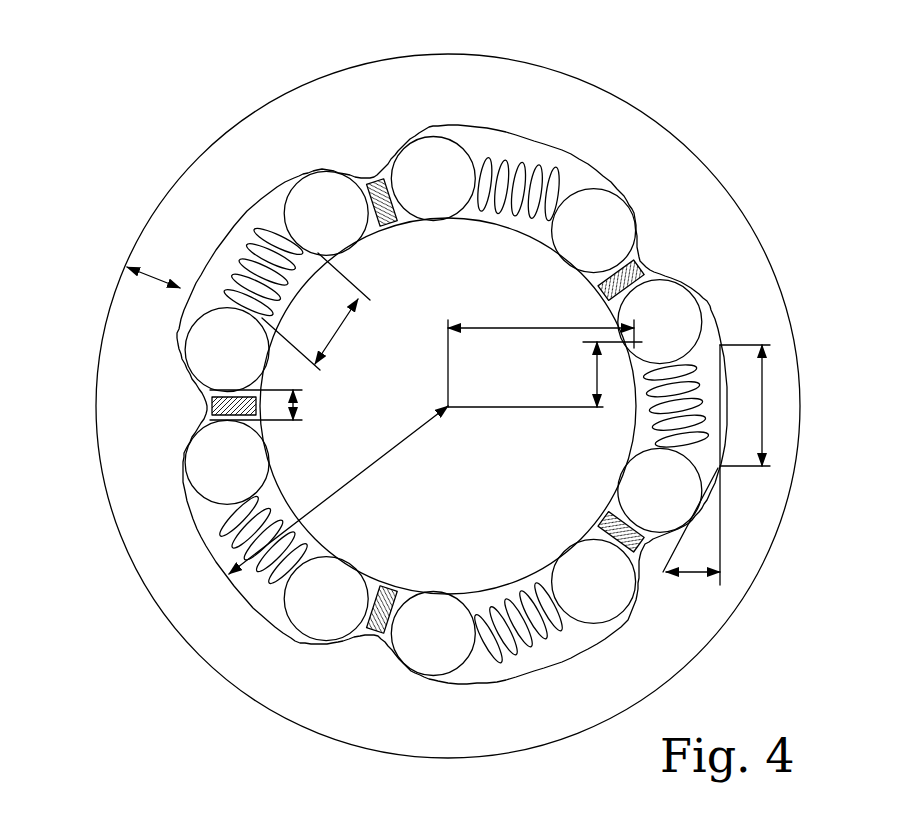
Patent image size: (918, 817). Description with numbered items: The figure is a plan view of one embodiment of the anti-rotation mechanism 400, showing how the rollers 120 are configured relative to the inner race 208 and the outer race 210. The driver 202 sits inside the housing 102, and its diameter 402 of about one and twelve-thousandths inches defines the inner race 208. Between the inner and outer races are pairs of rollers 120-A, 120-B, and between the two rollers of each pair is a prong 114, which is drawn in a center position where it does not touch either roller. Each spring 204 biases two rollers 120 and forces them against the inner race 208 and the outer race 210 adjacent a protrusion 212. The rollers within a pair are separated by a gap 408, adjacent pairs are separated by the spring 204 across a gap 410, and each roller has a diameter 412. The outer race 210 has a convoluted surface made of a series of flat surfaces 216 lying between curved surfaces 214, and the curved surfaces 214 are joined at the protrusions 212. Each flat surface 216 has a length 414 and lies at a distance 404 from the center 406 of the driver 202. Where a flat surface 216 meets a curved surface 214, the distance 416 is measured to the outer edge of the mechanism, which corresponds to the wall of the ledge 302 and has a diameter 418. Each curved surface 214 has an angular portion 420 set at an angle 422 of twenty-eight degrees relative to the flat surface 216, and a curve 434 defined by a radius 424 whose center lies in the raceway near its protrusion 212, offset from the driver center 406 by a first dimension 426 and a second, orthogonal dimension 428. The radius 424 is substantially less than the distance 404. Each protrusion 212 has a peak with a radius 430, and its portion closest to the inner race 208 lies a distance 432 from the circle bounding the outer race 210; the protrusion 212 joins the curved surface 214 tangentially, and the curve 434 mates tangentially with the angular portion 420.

The anti-rotation mechanism 400 is at (128, 98).
The housing 102 is at (672, 130).
The ledge 302 is at (380, 721).
The driver 202 is at (602, 450).
The flat surface 216 is at (548, 148).
The curved surface 214 is at (437, 128).
The roller 120-A is at (356, 224).
The roller 120-B is at (464, 190).
The roller 120 is at (617, 590).
The diameter 412 is at (468, 142).
The radius 424 is at (692, 296).
The curve 434 is at (660, 281).
The prong 114 is at (210, 405).
The protrusion 212 is at (370, 174).
The distance 432 is at (646, 262).
The diameter 402 is at (603, 499).
The radius 430 is at (367, 641).
The inner race 208 is at (285, 512).
The outer race 210 is at (478, 660).
The spring 204 is at (252, 610).
The second dimension 428 is at (518, 329).
The first dimension 426 is at (594, 377).
The center 406 is at (446, 404).
The distance 404 is at (362, 474).
The length 414 is at (768, 438).
The angular portion 420 is at (707, 496).
The angle 422 is at (695, 575).
The gap 410 is at (343, 330).
The gap 408 is at (295, 410).
The distance 416 is at (160, 285).
The diameter 418 is at (218, 675).